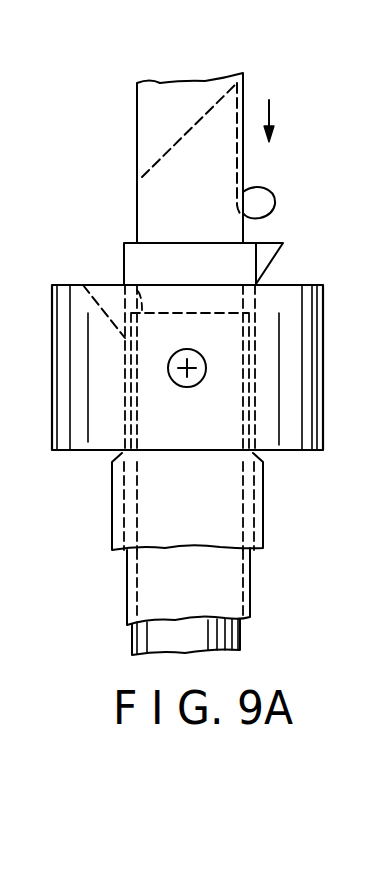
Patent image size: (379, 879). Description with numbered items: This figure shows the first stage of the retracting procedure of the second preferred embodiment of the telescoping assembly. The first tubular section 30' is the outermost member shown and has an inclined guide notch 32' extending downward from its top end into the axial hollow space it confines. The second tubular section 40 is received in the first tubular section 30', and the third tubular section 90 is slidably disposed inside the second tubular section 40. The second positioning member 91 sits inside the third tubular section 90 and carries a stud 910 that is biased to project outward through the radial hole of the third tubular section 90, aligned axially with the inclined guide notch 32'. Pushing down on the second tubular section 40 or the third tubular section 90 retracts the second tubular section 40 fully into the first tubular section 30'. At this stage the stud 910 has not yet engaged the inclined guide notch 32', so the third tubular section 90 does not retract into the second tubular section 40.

The third tubular section 90 is at (137, 133).
The second positioning member 91 is at (212, 107).
The stud 910 is at (273, 188).
The inclined guide notch 32' is at (305, 240).
The first tubular section 30' is at (215, 501).
The second tubular section 40 is at (250, 590).